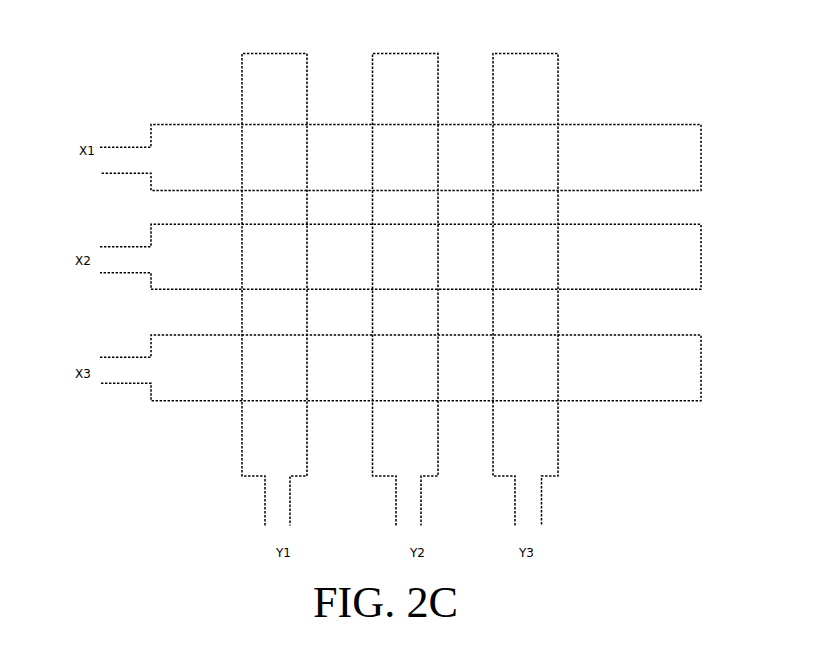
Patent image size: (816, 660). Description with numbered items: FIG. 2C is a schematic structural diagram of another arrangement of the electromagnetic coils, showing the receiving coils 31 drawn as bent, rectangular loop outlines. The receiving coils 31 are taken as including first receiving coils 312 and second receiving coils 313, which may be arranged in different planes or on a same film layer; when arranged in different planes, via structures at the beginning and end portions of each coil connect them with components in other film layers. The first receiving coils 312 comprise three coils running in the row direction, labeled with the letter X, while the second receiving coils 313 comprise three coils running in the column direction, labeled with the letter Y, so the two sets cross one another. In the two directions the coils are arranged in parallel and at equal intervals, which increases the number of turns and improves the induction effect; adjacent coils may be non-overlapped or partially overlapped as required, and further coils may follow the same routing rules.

The receiving coils 31 is at (400, 266).
The first receiving coils 312 is at (639, 124).
The second receiving coils 313 is at (417, 65).